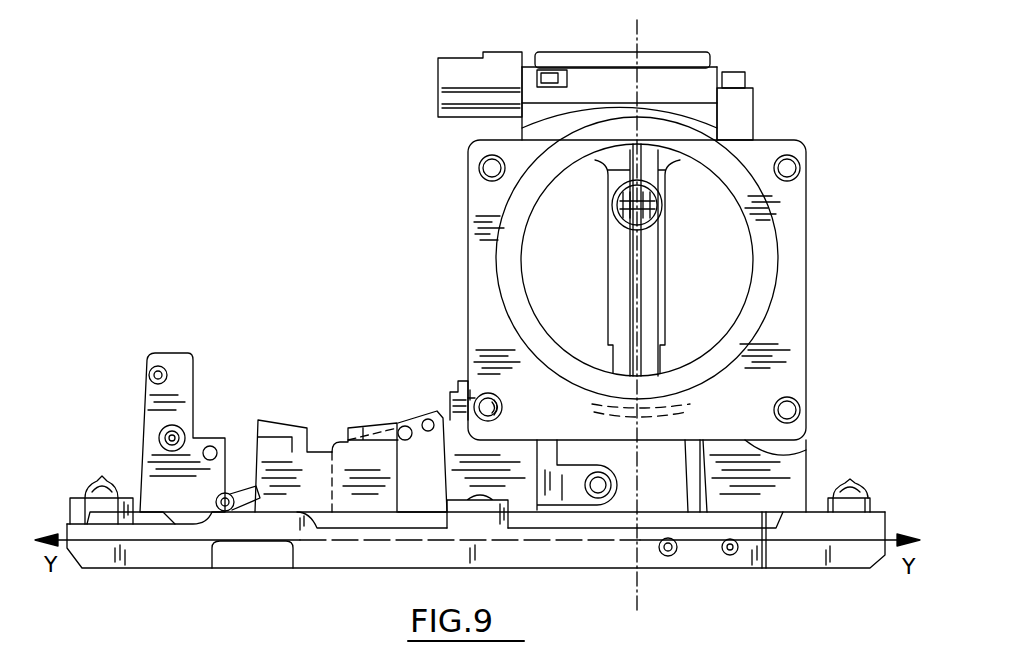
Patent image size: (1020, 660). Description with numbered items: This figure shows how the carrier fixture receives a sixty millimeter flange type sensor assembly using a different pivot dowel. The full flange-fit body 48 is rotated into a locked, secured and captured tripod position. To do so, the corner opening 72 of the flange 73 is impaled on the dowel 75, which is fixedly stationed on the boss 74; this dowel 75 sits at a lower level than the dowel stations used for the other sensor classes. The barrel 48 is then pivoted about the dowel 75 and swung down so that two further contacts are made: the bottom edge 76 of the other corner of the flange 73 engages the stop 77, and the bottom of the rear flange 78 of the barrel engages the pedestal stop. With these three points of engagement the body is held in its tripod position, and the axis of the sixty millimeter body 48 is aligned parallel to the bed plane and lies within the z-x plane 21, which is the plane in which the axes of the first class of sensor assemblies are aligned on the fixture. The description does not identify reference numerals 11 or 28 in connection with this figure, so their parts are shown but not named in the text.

The base 11 is at (172, 557).
The z-x plane 21 is at (637, 298).
The shaft bearing 28 is at (641, 253).
The 60 mm full flange-fit body 48 is at (815, 167).
The corner opening 72 is at (501, 405).
The flange 73 is at (480, 242).
The boss 74 is at (457, 392).
The dowel 75 is at (482, 397).
The bottom edge 76 is at (810, 446).
The stop 77 is at (803, 440).
The rear flange 78 is at (688, 416).